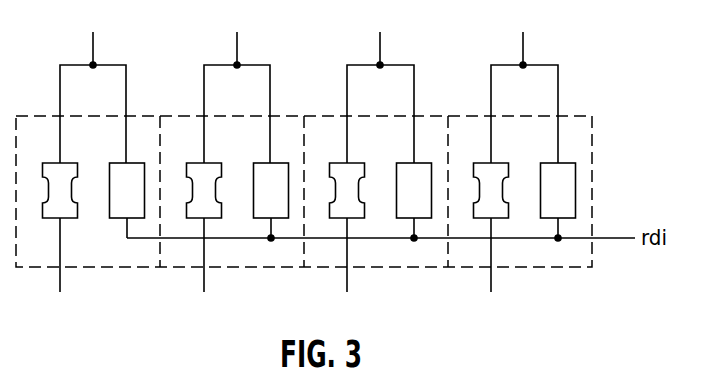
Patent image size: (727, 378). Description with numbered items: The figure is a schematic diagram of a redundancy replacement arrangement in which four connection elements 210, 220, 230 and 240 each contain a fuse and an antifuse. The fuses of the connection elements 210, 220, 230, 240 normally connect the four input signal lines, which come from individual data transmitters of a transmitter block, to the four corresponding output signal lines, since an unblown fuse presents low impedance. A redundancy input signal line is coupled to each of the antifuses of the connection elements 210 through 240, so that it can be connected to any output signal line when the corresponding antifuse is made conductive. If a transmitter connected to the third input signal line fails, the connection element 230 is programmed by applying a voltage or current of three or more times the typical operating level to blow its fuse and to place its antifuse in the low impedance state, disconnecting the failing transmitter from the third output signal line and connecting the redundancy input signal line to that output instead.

The connection element 210 is at (152, 116).
The connection element 220 is at (295, 116).
The connection element 230 is at (440, 117).
The connection element 240 is at (585, 117).